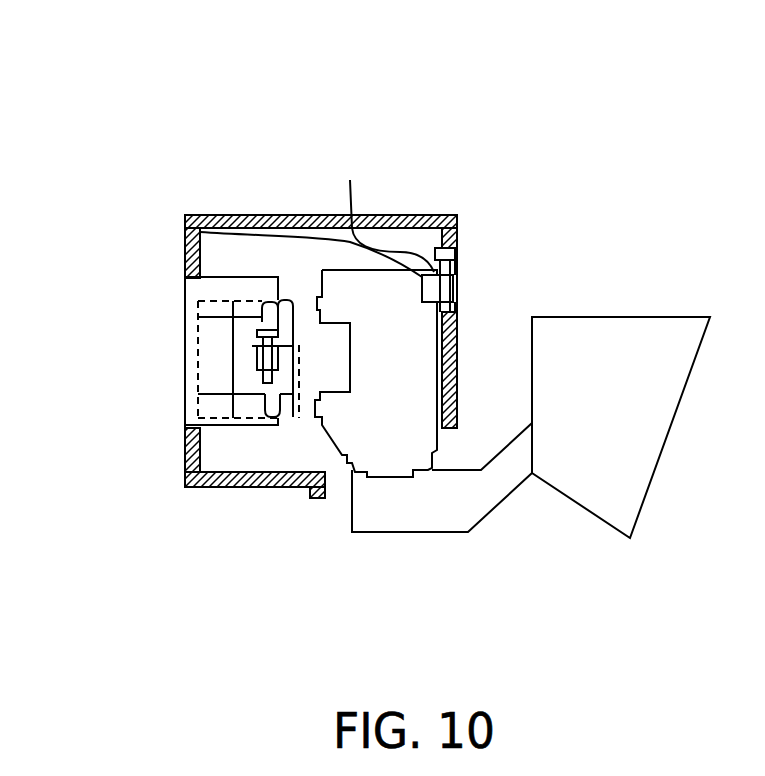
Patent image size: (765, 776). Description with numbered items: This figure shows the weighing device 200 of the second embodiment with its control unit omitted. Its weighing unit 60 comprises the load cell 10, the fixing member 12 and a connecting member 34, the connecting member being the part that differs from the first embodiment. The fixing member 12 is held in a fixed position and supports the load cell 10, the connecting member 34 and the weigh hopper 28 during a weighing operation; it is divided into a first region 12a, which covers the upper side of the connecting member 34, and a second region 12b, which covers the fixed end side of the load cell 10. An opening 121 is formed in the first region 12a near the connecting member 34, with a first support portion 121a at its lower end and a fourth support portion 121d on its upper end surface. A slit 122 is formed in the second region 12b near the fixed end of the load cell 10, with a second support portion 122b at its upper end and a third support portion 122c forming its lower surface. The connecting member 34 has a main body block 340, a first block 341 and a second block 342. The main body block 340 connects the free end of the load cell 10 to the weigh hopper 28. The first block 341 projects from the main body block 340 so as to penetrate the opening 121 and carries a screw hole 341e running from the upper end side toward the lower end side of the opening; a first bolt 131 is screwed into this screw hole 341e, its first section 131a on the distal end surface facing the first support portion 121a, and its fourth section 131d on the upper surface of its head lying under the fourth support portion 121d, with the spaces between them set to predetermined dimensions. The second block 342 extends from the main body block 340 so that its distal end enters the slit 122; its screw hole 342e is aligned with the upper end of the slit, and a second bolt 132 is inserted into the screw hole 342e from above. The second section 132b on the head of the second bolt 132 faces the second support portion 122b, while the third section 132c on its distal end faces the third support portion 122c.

The weighing device 200 is at (262, 115).
The weighing unit 60 is at (195, 177).
The fixing member 12 is at (186, 216).
The first region 12a is at (447, 210).
The second region 12b is at (178, 355).
The slit 122 is at (191, 367).
The second support portion 122b is at (255, 319).
The third support portion 122c is at (266, 384).
The opening 121 is at (461, 247).
The first support portion 121a is at (452, 320).
The fourth support portion 121d is at (457, 212).
The first bolt 131 is at (461, 258).
The first section 131a is at (454, 302).
The fourth section 131d is at (437, 247).
The second bolt 132 is at (257, 346).
The second section 132b is at (262, 314).
The third section 132c is at (263, 371).
The load cell 10 is at (310, 353).
The connecting member 34 is at (446, 458).
The main body block 340 is at (394, 455).
The first block 341 is at (377, 214).
The screw hole 341e is at (468, 283).
The second block 342 is at (294, 400).
The screw hole 342e is at (238, 347).
The weigh hopper 28 is at (587, 493).